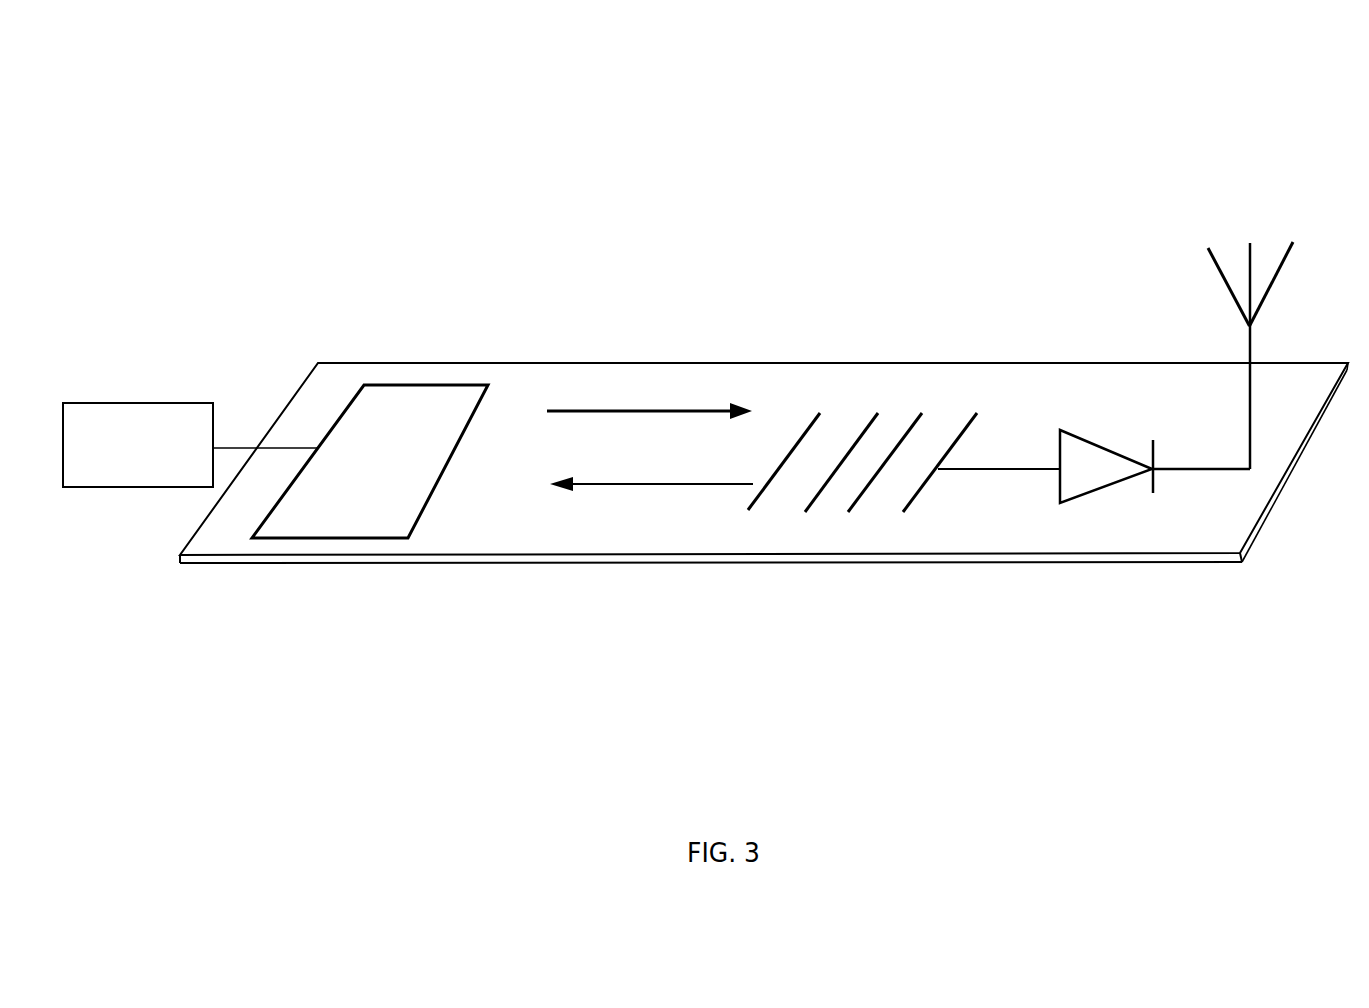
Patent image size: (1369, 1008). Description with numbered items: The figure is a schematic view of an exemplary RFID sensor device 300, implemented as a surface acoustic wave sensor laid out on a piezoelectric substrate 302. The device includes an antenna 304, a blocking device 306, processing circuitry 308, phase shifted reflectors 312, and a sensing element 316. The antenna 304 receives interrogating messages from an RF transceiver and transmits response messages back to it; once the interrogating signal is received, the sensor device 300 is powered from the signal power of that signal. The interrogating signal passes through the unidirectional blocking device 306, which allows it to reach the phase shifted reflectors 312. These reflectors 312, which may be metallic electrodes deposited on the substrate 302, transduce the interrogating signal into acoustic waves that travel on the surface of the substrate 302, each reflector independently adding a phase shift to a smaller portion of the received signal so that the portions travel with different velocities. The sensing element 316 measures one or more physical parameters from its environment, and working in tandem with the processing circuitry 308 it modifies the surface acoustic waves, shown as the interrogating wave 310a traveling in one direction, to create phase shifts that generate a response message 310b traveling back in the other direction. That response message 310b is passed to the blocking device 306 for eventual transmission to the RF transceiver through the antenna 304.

The RFID sensor device 300 is at (128, 109).
The substrate 302 is at (704, 364).
The antenna 304 is at (1203, 247).
The blocking device 306 is at (1108, 476).
The processing circuitry 308 is at (395, 472).
The surface acoustic wave interrogating wave 310a is at (630, 404).
The surface acoustic wave response message 310b is at (626, 516).
The phase shifted reflectors 312 is at (863, 404).
The sensing element 316 is at (213, 486).